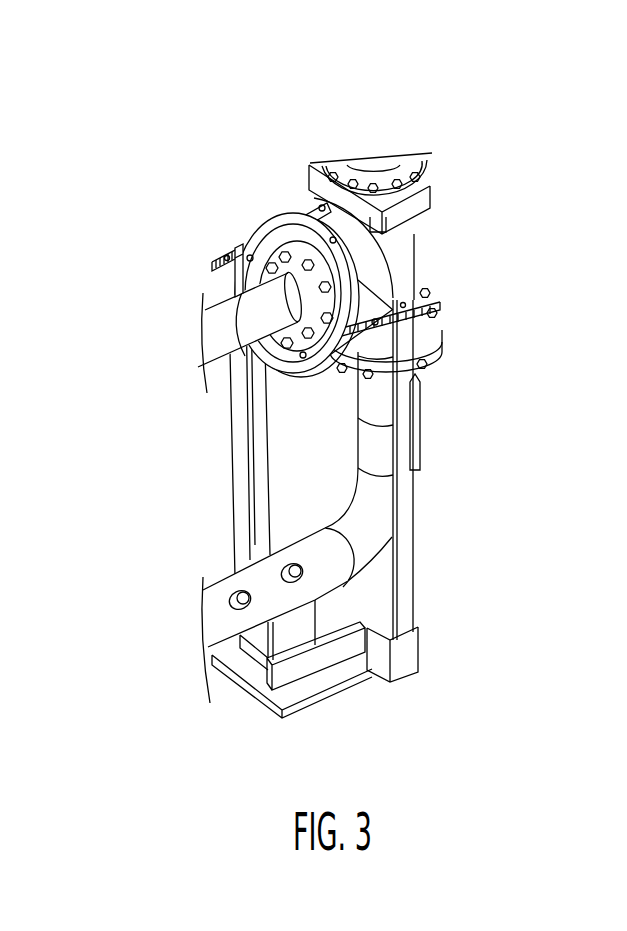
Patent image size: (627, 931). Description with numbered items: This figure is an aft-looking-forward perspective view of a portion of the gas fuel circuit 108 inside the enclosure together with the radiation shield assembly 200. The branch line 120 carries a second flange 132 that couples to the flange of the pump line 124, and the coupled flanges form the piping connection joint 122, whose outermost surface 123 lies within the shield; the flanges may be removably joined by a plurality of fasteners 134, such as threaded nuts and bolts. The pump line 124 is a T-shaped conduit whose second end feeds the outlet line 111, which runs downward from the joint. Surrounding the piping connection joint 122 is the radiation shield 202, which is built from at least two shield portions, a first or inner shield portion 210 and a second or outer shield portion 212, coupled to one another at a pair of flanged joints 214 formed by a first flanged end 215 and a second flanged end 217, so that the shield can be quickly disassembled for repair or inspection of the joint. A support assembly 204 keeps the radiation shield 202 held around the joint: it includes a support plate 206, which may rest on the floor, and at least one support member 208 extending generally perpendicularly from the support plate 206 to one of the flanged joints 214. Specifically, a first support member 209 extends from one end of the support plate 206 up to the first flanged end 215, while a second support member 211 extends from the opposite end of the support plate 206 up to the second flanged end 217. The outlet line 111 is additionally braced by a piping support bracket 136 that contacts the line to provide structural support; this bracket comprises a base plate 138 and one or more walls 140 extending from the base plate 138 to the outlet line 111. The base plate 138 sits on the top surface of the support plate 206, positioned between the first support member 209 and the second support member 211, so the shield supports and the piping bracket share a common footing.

The gas fuel circuit 108 is at (487, 141).
The outlet line 111 is at (377, 508).
The branch line 120 is at (210, 338).
The piping connection joint 122 is at (315, 362).
The outermost surface 123 is at (286, 365).
The pump line 124 is at (400, 250).
The second flange 132 is at (285, 318).
The fasteners 134 is at (425, 308).
The piping support bracket 136 is at (341, 698).
The base plate 138 is at (228, 682).
The walls 140 is at (297, 630).
The radiation shield assembly 200 is at (318, 445).
The radiation shield 202 is at (245, 255).
The support assembly 204 is at (318, 469).
The support plate 206 is at (384, 683).
The support member 208 is at (326, 430).
The first support member 209 is at (250, 440).
The first shield portion 210 is at (332, 358).
The second support member 211 is at (405, 474).
The second shield portion 212 is at (288, 224).
The flanged joints 214 is at (318, 306).
The first flanged end 215 is at (222, 253).
The second flanged end 217 is at (430, 340).